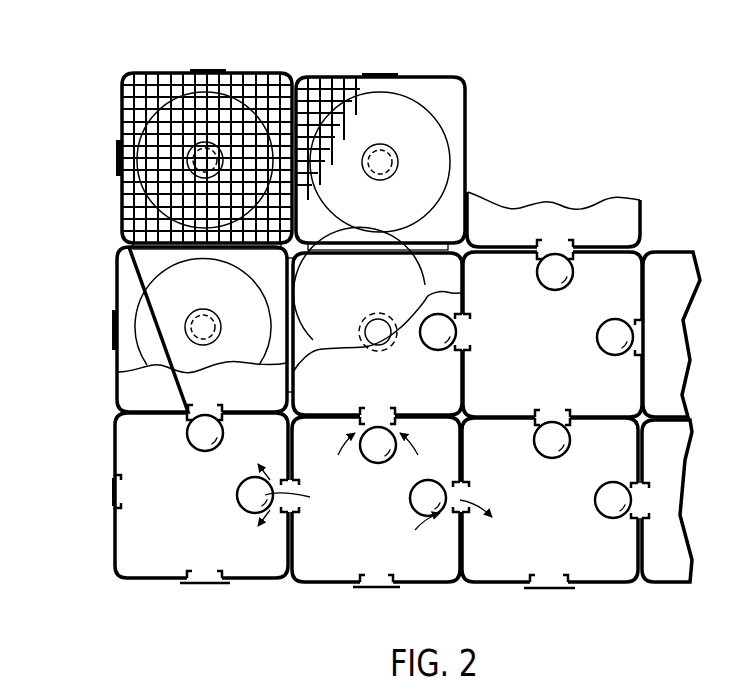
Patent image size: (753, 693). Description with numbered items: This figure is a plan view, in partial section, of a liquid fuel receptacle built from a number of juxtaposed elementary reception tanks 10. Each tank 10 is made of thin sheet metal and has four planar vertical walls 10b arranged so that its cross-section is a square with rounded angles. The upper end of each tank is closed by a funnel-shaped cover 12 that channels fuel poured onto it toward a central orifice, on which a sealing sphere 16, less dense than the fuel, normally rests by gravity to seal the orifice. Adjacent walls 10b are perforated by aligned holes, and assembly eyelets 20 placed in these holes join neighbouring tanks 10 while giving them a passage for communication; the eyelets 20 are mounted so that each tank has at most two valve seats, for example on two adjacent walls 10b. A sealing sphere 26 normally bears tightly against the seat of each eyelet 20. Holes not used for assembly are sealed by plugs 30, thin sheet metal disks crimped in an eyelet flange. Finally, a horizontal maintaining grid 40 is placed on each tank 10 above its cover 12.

The elementary reception tank 10 is at (470, 100).
The vertical wall 10b is at (320, 580).
The cover 12 is at (340, 112).
The sealing sphere 16 is at (398, 142).
The assembly eyelet 20 is at (480, 317).
The sealing sphere 26 is at (617, 310).
The plug 30 is at (198, 586).
The horizontal maintaining grid 40 is at (155, 90).